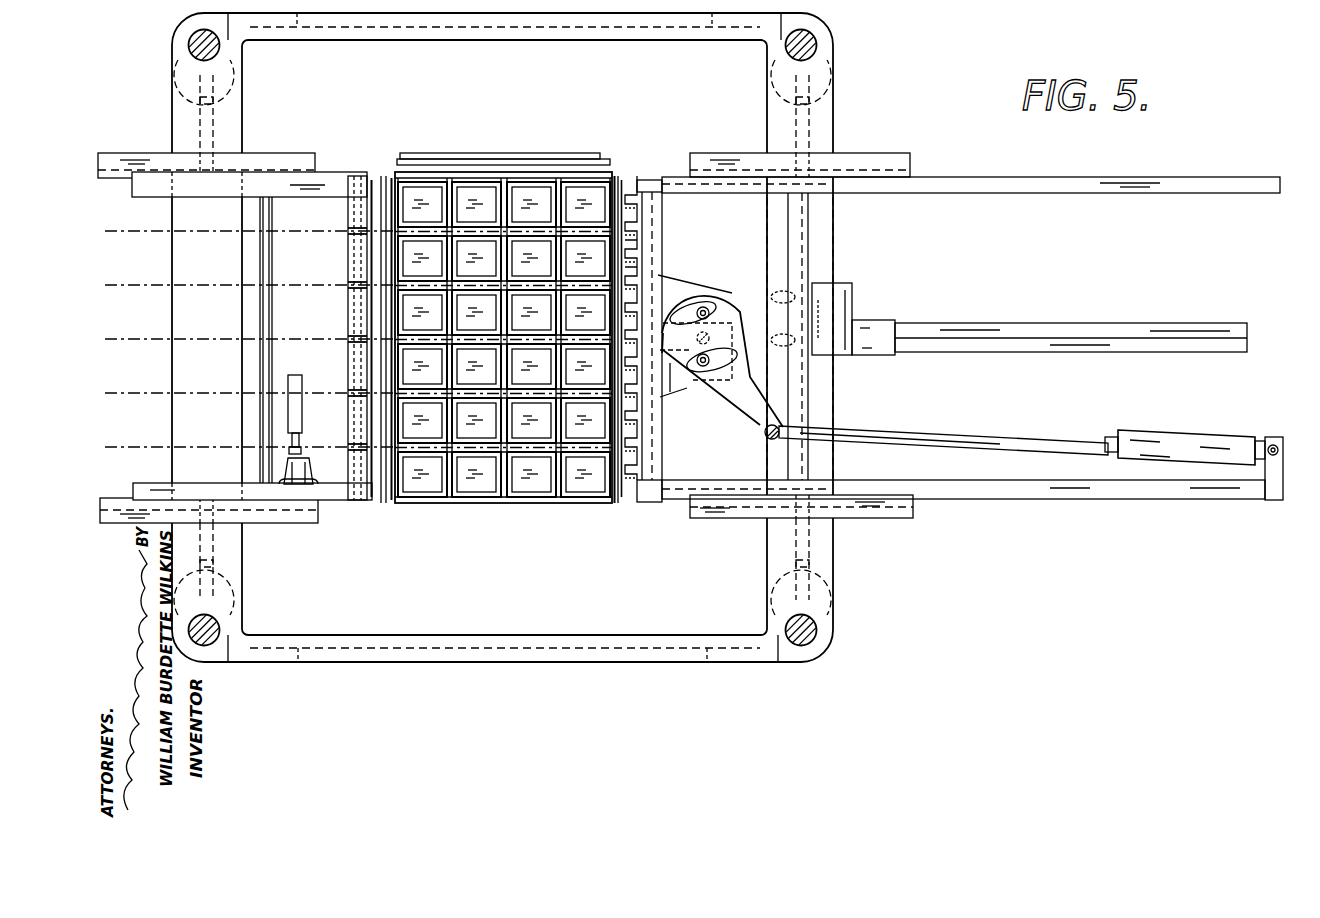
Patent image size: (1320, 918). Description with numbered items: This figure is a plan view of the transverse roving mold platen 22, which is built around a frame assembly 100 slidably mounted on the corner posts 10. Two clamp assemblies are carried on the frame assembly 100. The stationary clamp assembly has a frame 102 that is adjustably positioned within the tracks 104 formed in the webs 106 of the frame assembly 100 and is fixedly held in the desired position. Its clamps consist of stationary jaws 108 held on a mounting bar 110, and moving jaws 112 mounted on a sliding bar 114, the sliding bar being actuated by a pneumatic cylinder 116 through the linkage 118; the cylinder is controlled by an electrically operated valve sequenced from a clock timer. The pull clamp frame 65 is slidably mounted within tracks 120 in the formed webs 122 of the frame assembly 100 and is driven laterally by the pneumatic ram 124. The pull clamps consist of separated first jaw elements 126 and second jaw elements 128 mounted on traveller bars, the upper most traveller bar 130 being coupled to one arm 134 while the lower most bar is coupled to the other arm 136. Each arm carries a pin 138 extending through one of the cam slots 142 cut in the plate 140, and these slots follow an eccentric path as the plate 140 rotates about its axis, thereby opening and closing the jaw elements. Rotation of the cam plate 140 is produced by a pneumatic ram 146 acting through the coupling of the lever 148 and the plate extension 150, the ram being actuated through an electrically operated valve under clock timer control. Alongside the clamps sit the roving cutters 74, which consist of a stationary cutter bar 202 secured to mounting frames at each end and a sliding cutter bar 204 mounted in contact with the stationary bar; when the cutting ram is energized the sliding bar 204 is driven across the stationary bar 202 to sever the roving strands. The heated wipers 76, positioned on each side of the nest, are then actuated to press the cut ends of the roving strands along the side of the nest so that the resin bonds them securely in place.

The corner posts 10 is at (192, 42).
The platen 22 is at (824, 660).
The pull clamp frame 65 is at (943, 177).
The roving cutters 74 is at (522, 154).
The wipers 76 is at (386, 177).
The frame assembly 100 is at (838, 633).
The frame 102 is at (327, 178).
The tracks 104 is at (294, 172).
The formed webs 106 is at (263, 160).
The stationary jaws 108 is at (347, 483).
The mounting bar 110 is at (347, 458).
The moving jaws 112 is at (347, 432).
The sliding bar 114 is at (347, 340).
The pneumatic cylinder 116 is at (300, 488).
The linkage 118 is at (308, 375).
The tracks 120 is at (886, 170).
The formed webs 122 is at (852, 155).
The pneumatic ram 124 is at (883, 323).
The first jaw elements 126 is at (630, 186).
The second jaw elements 128 is at (636, 242).
The traveller bar 130 is at (647, 208).
The arm 134 is at (712, 305).
The arm 136 is at (685, 390).
The pin 138 is at (705, 310).
The plate 140 is at (772, 296).
The cam slots 142 is at (688, 300).
The pneumatic ram 146 is at (1170, 440).
The lever 148 is at (970, 432).
The plate extension 150 is at (755, 418).
The stationary cutter bar 202 is at (455, 153).
The sliding cutter bar 204 is at (592, 159).